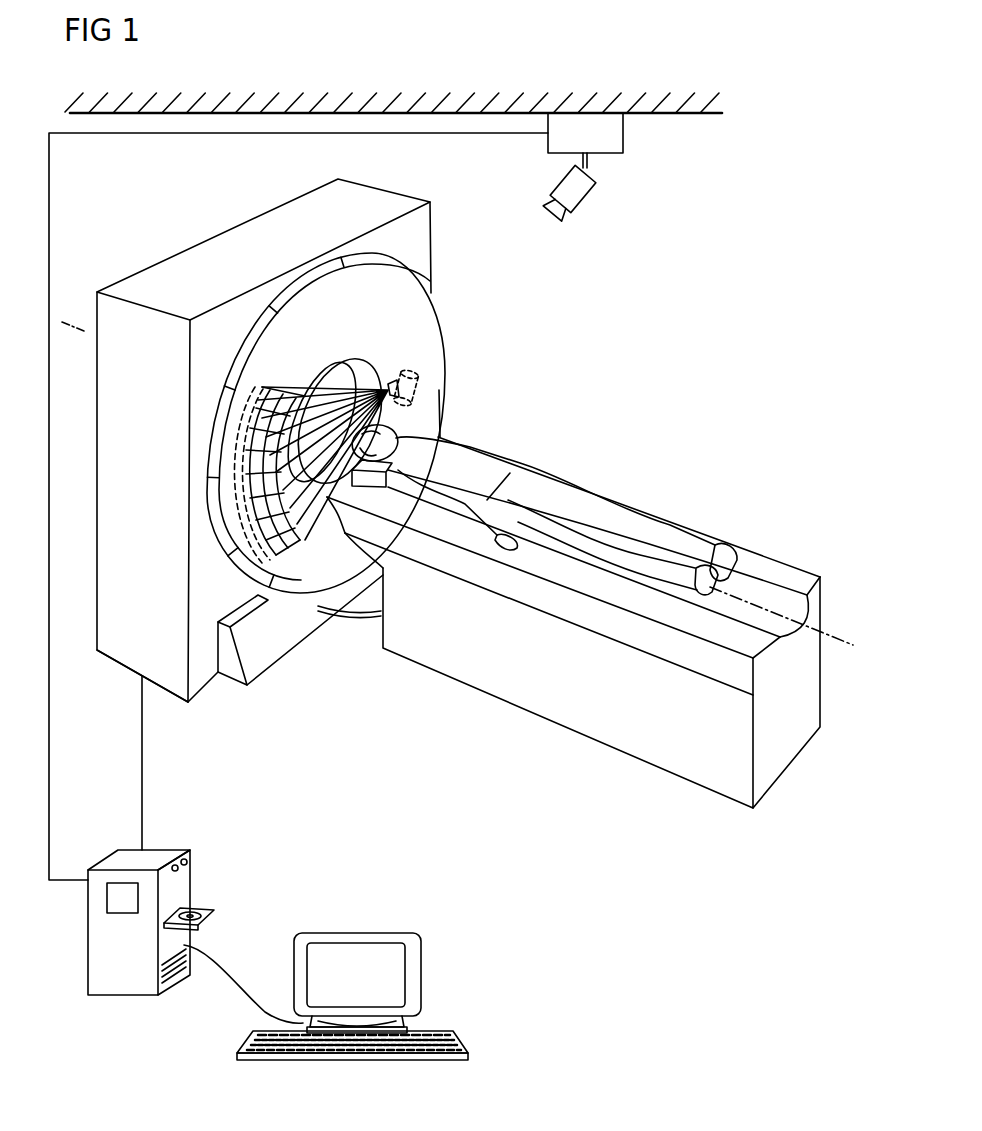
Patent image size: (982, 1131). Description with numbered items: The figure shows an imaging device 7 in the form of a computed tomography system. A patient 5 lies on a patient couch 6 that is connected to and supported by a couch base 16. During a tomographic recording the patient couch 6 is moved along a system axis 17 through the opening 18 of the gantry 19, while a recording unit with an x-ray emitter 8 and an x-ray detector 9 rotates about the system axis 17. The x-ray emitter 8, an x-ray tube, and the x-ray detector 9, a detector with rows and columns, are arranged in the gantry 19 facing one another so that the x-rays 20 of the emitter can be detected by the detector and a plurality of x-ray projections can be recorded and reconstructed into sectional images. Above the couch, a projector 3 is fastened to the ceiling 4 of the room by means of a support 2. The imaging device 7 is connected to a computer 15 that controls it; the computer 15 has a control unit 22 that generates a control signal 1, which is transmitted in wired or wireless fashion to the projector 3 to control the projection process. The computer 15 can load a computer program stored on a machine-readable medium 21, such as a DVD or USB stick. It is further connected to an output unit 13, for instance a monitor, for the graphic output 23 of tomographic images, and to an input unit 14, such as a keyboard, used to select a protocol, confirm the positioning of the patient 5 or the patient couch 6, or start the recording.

The control signal 1 is at (52, 742).
The support 2 is at (623, 143).
The projector 3 is at (588, 195).
The ceiling 4 is at (707, 120).
The patient 5 is at (470, 465).
The patient couch 6 is at (785, 568).
The imaging device 7 is at (175, 230).
The x-ray emitter 8 is at (418, 388).
The x-ray detector 9 is at (275, 543).
The output unit 13 is at (368, 930).
The input unit 14 is at (465, 1050).
The computer 15 is at (166, 850).
The couch base 16 is at (540, 705).
The system axis 17 is at (852, 628).
The opening 18 is at (336, 388).
The gantry 19 is at (132, 648).
The x-rays 20 is at (358, 385).
The machine-readable medium 21 is at (197, 908).
The control unit 22 is at (120, 878).
The graphic output 23 is at (390, 983).